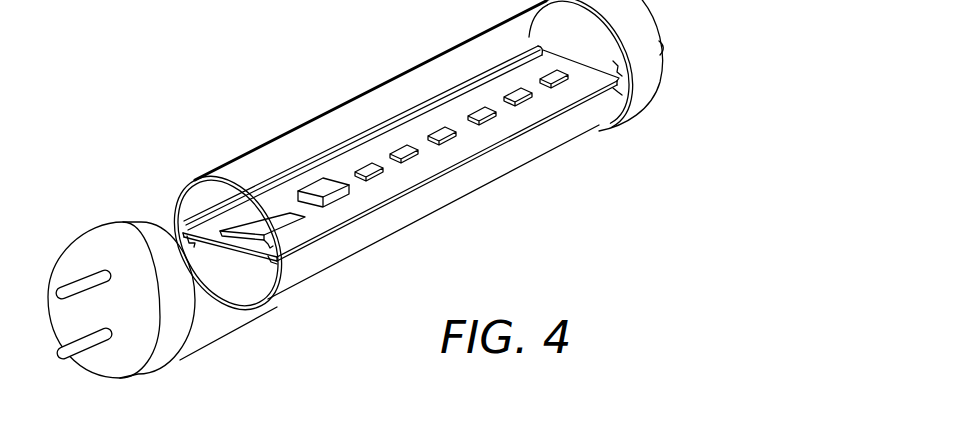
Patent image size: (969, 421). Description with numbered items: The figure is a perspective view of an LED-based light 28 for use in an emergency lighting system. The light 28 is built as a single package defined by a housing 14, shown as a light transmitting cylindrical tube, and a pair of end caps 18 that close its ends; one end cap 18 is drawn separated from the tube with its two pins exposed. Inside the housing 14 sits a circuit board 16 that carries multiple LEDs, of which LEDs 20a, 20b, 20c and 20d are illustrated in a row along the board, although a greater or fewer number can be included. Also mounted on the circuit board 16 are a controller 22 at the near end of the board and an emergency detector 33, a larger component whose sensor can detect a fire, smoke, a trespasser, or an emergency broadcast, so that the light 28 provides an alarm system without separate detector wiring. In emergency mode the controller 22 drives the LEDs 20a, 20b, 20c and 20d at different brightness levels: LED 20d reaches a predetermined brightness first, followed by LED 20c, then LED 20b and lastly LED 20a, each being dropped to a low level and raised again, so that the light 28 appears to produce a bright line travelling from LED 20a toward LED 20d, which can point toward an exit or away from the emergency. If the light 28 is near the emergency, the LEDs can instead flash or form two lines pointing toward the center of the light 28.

The housing 14 is at (443, 208).
The circuit board 16 is at (505, 125).
The end caps 18 is at (110, 228).
The LED 20a is at (362, 170).
The LED 20b is at (396, 152).
The LED 20c is at (434, 134).
The LED 20d is at (483, 119).
The controller 22 is at (290, 225).
The light 28 is at (203, 77).
The emergency detector 33 is at (330, 188).